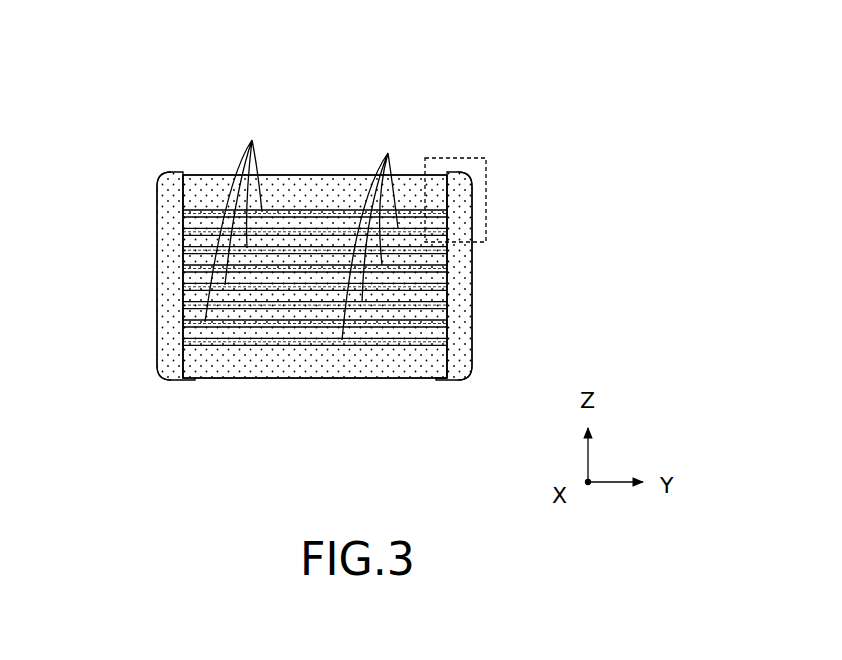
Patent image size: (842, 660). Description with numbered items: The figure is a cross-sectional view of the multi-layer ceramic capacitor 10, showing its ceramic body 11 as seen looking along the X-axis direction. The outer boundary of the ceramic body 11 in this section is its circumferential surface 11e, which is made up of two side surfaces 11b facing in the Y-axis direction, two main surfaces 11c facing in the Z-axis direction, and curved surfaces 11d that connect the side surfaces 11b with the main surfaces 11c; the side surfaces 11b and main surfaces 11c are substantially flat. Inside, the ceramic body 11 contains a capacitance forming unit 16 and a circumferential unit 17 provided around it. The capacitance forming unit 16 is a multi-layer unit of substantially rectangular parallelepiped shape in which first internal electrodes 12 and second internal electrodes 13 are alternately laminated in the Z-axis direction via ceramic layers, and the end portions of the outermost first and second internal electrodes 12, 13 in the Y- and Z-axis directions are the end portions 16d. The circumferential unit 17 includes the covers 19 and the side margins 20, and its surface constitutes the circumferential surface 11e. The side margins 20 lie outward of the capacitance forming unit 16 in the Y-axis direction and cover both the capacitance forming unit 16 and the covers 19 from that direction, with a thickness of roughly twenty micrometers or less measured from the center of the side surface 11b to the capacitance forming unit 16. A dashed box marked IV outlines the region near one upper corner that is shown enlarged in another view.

The multi-layer ceramic capacitor 10 is at (303, 263).
The ceramic body 11 is at (300, 272).
The side surfaces 11b is at (156, 255).
The main surfaces 11c is at (292, 173).
The curved surfaces 11d is at (163, 177).
The circumferential surface 11e is at (465, 436).
The first internal electrodes 12 is at (236, 216).
The second internal electrodes 13 is at (373, 234).
The capacitance forming unit 16 is at (315, 277).
The end portions 16d is at (178, 192).
The circumferential unit 17 is at (338, 293).
The covers 19 is at (212, 178).
The side margins 20 is at (472, 330).
The enlarged section IV is at (490, 187).